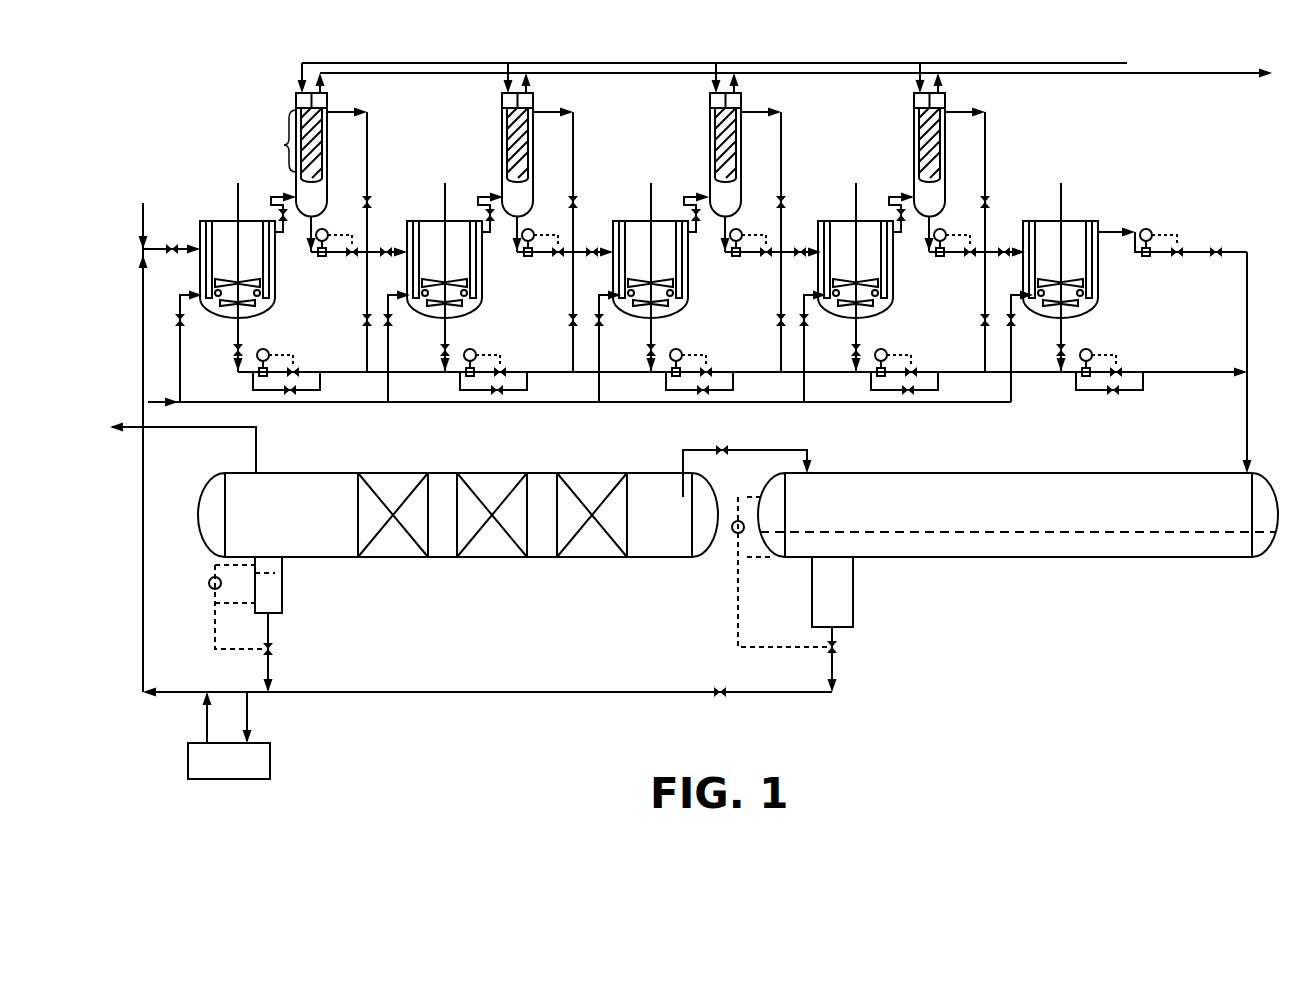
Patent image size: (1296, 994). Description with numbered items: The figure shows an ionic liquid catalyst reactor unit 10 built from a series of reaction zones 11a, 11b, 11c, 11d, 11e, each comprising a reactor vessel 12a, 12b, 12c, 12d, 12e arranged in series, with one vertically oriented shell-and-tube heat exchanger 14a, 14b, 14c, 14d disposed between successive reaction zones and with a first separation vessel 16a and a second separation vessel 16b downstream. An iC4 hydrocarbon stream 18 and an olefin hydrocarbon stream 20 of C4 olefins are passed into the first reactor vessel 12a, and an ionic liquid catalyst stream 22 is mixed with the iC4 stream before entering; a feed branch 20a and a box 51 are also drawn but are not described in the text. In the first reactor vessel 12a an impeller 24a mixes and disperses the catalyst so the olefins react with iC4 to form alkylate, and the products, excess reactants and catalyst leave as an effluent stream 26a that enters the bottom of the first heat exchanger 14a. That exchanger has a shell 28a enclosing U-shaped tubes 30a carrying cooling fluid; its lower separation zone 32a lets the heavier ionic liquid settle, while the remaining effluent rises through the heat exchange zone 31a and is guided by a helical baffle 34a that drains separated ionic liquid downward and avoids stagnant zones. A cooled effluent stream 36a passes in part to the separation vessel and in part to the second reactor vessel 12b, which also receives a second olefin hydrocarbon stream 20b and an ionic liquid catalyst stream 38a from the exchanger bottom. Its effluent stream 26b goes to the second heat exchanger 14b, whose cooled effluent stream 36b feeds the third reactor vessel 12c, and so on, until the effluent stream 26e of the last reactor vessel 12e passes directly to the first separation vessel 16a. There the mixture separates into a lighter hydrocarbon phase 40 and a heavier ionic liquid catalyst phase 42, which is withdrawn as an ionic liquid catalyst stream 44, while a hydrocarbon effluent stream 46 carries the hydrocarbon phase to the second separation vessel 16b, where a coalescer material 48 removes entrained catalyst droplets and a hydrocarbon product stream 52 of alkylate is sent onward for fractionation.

The reactor unit 10 is at (186, 112).
The reaction zone 11a is at (254, 230).
The reaction zone 11b is at (484, 253).
The reaction zone 11c is at (707, 232).
The reaction zone 11d is at (912, 232).
The reaction zone 11e is at (1126, 269).
The first reactor vessel 12a is at (276, 298).
The second reactor vessel 12b is at (480, 300).
The third reactor vessel 12c is at (686, 300).
The reactor vessel 12d is at (895, 293).
The reactor vessel 12e is at (1092, 316).
The first heat exchanger 14a is at (333, 137).
The second heat exchanger 14b is at (501, 128).
The heat exchanger 14c is at (709, 128).
The heat exchanger 14d is at (913, 128).
The first separation vessel 16a is at (1005, 538).
The second separation vessel 16b is at (458, 525).
The iC4 hydrocarbon stream 18 is at (147, 216).
The olefin hydrocarbon stream 20 is at (156, 402).
The first feed branch line 20a is at (178, 354).
The second olefin hydrocarbon stream 20b is at (387, 358).
The ionic liquid catalyst stream 22 is at (143, 313).
The impeller 24a is at (255, 314).
The effluent stream 26a is at (275, 197).
The effluent stream 26b is at (485, 196).
The effluent stream 26e is at (1108, 233).
The shell 28a is at (306, 178).
The U-shaped tubes 30a is at (302, 153).
The heat exchange zone 31a is at (294, 104).
The separation zone 32a is at (315, 203).
The helical baffle 34a is at (300, 172).
The cooled effluent stream 36a is at (352, 108).
The cooled effluent stream 36b is at (548, 111).
The ionic liquid catalyst stream 38a is at (296, 253).
The hydrocarbon phase 40 is at (951, 485).
The ionic liquid catalyst phase 42 is at (918, 547).
The ionic liquid catalyst stream 44 is at (836, 654).
The hydrocarbon effluent stream 46 is at (812, 465).
The coalescer material 48 is at (541, 487).
The controller 51 is at (247, 766).
The hydrocarbon product stream 52 is at (257, 450).